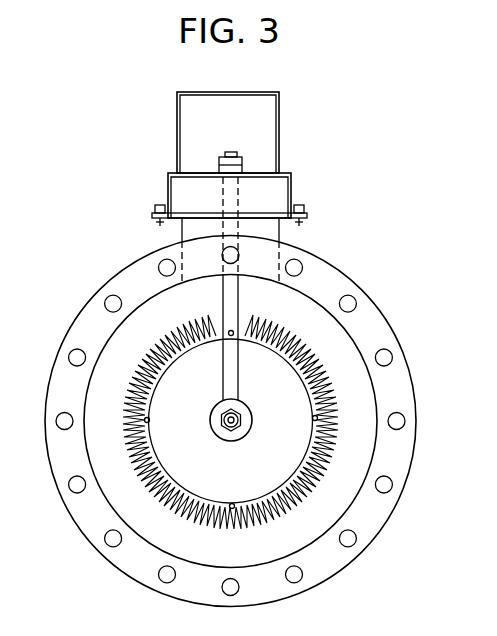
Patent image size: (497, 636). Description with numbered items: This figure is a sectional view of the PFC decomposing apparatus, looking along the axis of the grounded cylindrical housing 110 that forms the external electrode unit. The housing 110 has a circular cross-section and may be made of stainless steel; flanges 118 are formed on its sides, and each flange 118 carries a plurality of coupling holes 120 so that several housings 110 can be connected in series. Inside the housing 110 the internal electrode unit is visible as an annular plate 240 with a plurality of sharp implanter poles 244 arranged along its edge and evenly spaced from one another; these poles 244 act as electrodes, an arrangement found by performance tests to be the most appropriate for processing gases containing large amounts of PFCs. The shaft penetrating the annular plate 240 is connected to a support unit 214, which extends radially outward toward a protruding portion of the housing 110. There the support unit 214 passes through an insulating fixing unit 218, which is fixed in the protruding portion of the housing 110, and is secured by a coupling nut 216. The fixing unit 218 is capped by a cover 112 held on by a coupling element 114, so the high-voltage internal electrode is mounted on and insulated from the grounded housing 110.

The cylindrical housing 110 is at (322, 538).
The cover 112 is at (280, 133).
The coupling element 114 is at (303, 210).
The flange 118 is at (375, 320).
The coupling hole 120 is at (352, 298).
The support unit 214 is at (227, 292).
The coupling nut 216 is at (222, 160).
The insulating fixing unit 218 is at (263, 193).
The annular plate 240 is at (166, 488).
The implanter pole 244 is at (147, 477).